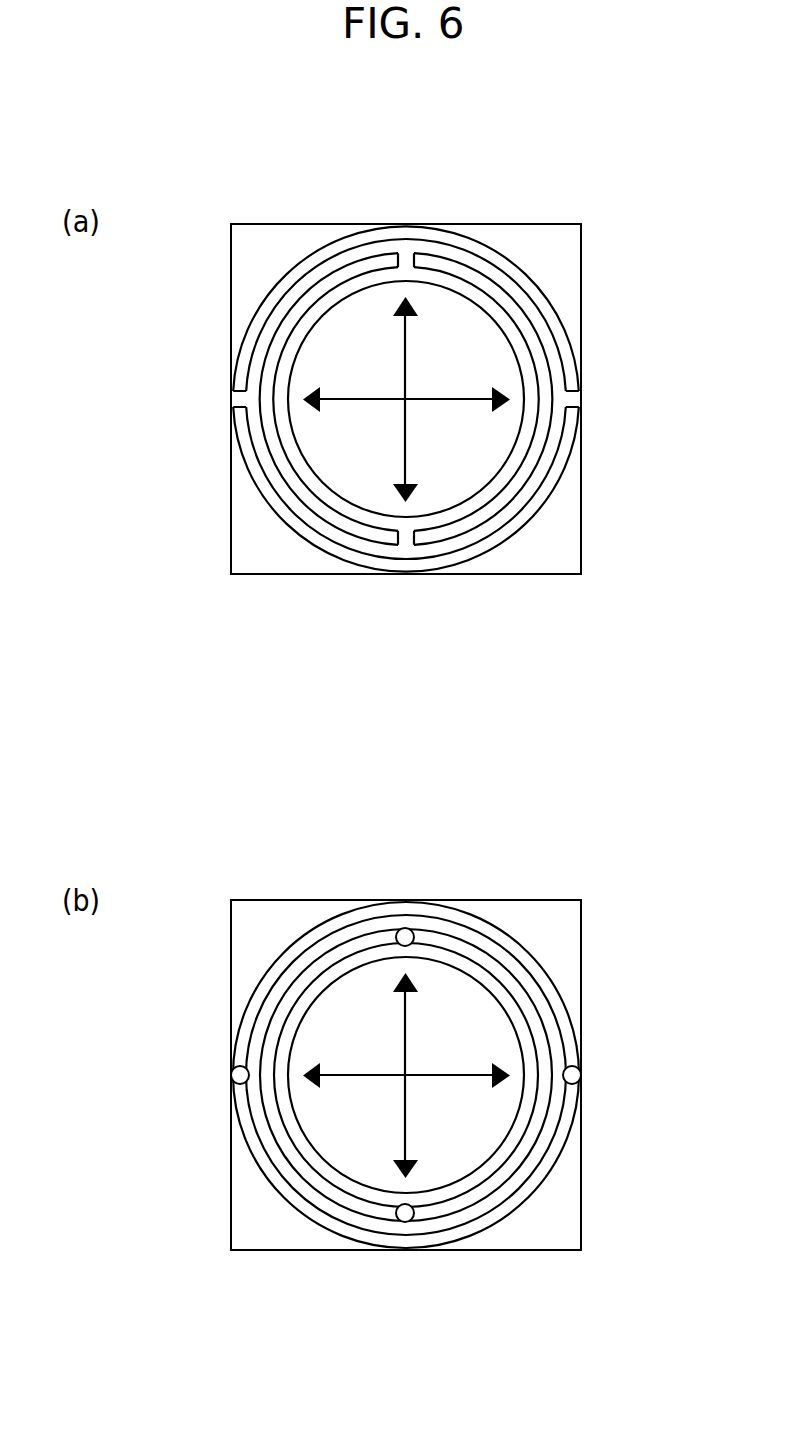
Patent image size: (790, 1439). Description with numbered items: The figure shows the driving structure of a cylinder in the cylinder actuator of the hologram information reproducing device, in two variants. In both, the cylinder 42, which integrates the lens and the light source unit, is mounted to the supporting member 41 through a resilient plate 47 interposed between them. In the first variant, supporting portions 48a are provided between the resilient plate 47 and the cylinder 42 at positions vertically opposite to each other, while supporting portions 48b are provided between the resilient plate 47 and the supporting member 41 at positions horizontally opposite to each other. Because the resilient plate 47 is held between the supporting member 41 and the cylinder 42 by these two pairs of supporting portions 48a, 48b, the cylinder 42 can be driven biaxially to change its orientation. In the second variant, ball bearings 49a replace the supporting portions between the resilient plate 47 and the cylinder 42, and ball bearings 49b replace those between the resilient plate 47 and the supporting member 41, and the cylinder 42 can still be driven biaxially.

The supporting member 41 is at (557, 252).
The cylinder 42 is at (480, 480).
The resilient plate 47 is at (465, 258).
The supporting portions 48a is at (404, 257).
The supporting portions 48b is at (243, 399).
The ball bearings 49a is at (404, 936).
The ball bearings 49b is at (240, 1077).